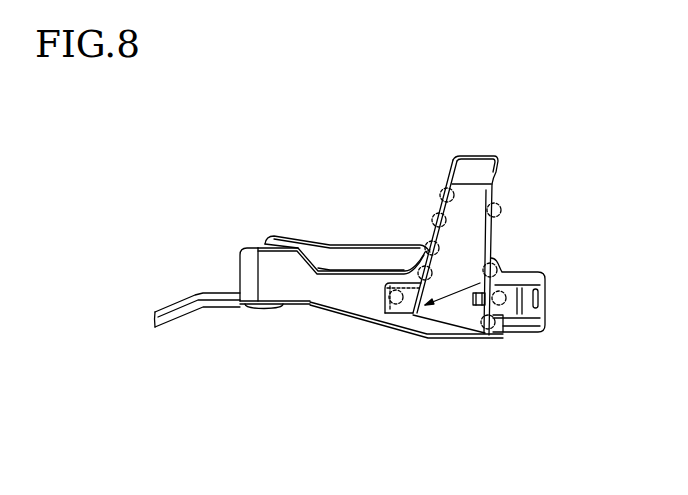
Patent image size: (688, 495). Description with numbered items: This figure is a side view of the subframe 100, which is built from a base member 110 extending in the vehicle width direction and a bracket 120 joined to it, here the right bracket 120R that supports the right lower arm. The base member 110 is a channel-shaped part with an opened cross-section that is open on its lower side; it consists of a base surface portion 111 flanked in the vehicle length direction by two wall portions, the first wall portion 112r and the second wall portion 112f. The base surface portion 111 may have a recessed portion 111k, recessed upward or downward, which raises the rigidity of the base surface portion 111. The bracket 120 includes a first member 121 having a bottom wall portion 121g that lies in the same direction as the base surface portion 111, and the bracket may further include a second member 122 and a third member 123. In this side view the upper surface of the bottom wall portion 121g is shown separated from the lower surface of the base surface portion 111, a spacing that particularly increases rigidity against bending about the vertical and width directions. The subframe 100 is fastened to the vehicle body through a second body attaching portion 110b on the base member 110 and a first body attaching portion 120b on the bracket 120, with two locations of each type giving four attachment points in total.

The subframe 100 is at (493, 362).
The base member 110 is at (399, 257).
The second body attaching portion 110b is at (165, 320).
The base surface portion 111 is at (369, 250).
The recessed portion 111k is at (330, 272).
The first wall portion 112r is at (240, 268).
The second wall portion 112f is at (545, 302).
The bracket 120 is at (449, 273).
The right bracket 120R is at (497, 233).
The first body attaching portion 120b is at (492, 160).
The first member 121 is at (350, 322).
The bottom wall portion 121g is at (330, 302).
The second member 122 is at (437, 213).
The third member 123 is at (447, 282).